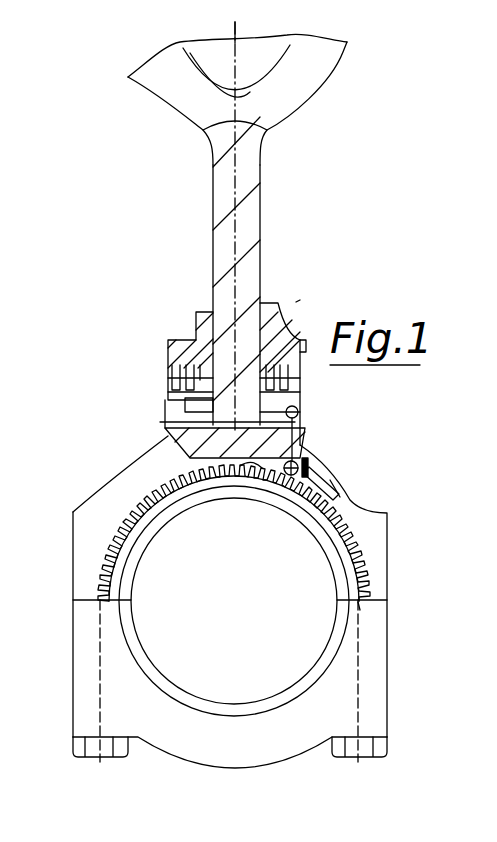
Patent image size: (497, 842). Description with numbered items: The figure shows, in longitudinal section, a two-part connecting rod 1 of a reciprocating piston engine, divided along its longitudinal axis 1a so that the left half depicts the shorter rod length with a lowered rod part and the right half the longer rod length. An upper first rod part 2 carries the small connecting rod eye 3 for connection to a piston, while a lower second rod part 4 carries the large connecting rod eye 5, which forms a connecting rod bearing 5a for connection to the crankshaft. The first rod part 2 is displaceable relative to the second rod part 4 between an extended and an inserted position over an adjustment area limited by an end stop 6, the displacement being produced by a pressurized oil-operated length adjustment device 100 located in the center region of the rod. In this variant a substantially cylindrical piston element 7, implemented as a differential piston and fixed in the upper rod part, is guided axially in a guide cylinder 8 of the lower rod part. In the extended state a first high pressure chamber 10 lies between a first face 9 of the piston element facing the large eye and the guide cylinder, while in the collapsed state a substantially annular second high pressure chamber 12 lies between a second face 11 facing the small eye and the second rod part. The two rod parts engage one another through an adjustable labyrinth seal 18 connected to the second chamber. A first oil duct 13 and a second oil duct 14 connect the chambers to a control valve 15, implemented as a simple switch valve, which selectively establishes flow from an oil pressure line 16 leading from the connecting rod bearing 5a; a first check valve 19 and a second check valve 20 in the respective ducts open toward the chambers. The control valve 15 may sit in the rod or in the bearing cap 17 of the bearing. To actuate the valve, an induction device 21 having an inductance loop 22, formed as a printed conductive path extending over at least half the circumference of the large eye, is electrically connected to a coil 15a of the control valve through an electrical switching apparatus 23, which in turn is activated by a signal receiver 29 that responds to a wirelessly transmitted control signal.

The connecting rod 1 is at (296, 302).
The longitudinal axis 1a is at (232, 148).
The upper first rod part 2 is at (260, 214).
The small connecting rod eye 3 is at (265, 65).
The lower second rod part 4 is at (140, 478).
The large connecting rod eye 5 is at (213, 675).
The connecting rod bearing 5a is at (140, 652).
The end stop 6 is at (185, 395).
The piston element 7 is at (165, 435).
The guide cylinder 8 is at (192, 415).
The first face 9 is at (290, 440).
The first high pressure chamber 10 is at (240, 442).
The second face 11 is at (185, 398).
The second high pressure chamber 12 is at (200, 372).
The first oil duct 13 is at (267, 462).
The second oil duct 14 is at (302, 398).
The control valve 15 is at (287, 467).
The coil 15a is at (358, 602).
The oil pressure line 16 is at (291, 505).
The bearing cap 17 is at (278, 745).
The labyrinth seal 18 is at (178, 368).
The first check valve 19 is at (233, 463).
The second check valve 20 is at (300, 413).
The induction device 21 is at (104, 527).
The inductance loop 22 is at (100, 566).
The electrical switching apparatus 23 is at (388, 513).
The signal receiver 29 is at (333, 493).
The length adjustment device 100 is at (150, 388).